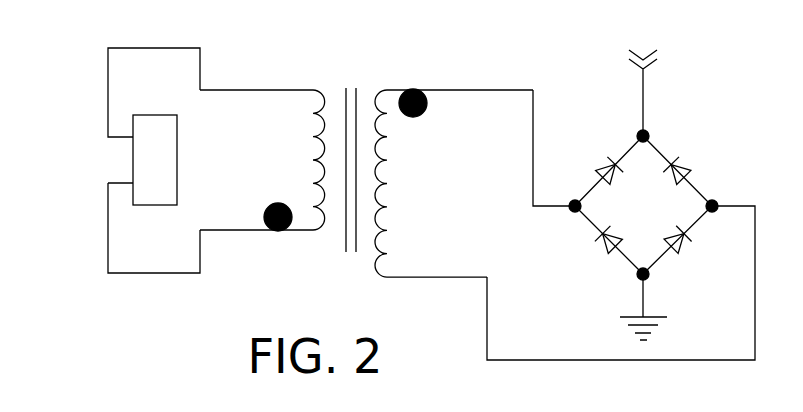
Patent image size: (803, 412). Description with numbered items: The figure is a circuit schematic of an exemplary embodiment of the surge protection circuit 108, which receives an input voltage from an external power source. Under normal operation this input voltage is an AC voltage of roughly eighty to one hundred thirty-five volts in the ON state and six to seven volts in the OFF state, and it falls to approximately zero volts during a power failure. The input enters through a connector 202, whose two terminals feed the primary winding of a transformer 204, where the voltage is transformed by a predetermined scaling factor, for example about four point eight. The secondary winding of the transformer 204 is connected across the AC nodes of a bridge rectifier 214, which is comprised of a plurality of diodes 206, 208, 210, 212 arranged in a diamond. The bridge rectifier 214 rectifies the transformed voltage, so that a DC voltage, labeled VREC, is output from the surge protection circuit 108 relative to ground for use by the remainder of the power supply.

The surge protection circuit 108 is at (87, 93).
The connector 202 is at (143, 164).
The transformer 204 is at (350, 87).
The diode 206 is at (596, 166).
The diode 208 is at (690, 162).
The diode 210 is at (604, 246).
The diode 212 is at (683, 249).
The bridge rectifier 214 is at (645, 191).